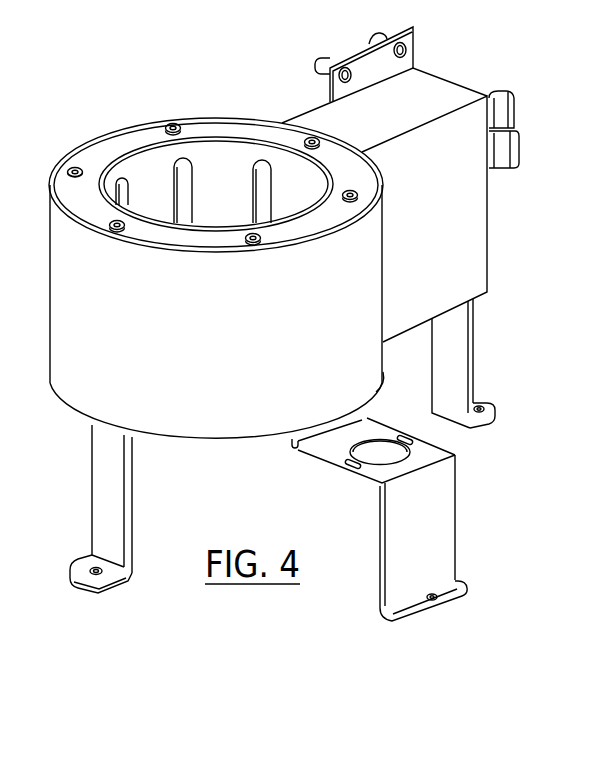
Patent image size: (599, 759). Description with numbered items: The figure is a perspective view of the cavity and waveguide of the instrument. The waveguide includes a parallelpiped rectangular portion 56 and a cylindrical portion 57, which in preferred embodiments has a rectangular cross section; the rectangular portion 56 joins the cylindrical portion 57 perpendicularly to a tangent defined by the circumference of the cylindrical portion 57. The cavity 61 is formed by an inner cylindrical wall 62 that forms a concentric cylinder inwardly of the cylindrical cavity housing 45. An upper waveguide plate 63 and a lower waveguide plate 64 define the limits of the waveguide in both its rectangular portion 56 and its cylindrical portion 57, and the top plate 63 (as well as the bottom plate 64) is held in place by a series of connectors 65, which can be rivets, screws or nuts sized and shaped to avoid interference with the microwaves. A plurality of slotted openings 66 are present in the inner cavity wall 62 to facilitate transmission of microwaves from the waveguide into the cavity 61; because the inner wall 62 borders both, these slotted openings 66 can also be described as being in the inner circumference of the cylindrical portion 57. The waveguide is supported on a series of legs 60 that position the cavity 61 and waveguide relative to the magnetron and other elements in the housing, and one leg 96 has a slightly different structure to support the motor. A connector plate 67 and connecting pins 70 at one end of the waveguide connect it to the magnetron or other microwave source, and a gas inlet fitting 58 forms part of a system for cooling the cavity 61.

The cylindrical cavity housing 45 is at (236, 344).
The parallelpiped rectangular portion 56 is at (443, 234).
The cylindrical portion 57 is at (380, 383).
The gas inlet fitting 58 is at (505, 150).
The legs 60 is at (458, 353).
The cavity 61 is at (184, 98).
The inner cylindrical wall 62 is at (230, 165).
The upper waveguide plate 63 is at (394, 121).
The lower waveguide plate 64 is at (178, 448).
The connectors 65 is at (73, 167).
The slotted openings 66 is at (127, 195).
The connector plate 67 is at (362, 48).
The connecting pins 70 is at (378, 36).
The leg 96 is at (443, 527).